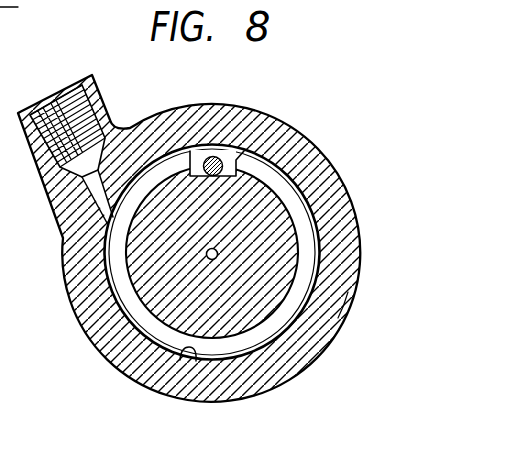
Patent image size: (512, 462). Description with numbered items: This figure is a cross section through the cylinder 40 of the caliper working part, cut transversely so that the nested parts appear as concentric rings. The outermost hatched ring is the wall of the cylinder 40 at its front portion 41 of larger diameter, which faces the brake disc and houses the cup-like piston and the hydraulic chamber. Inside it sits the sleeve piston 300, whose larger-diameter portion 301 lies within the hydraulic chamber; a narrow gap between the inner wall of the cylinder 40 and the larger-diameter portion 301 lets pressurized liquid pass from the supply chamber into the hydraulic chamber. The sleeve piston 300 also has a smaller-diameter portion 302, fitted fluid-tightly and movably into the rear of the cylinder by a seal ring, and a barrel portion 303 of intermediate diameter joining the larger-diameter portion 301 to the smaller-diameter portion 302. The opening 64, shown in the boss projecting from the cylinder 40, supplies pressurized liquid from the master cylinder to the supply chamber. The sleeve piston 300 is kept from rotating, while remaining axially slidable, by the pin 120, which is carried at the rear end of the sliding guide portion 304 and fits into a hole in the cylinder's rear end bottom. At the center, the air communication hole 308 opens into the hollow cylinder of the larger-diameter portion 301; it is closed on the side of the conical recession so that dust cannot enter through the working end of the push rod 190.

The cylinder 40 is at (303, 157).
The front portion 41 is at (193, 354).
The opening 64 is at (107, 197).
The pin 120 is at (213, 156).
The push rod 190 is at (26, 7).
The sleeve piston 300 is at (306, 191).
The larger-diameter portion 301 is at (306, 218).
The smaller-diameter portion 302 is at (155, 308).
The barrel portion 303 is at (350, 288).
The sliding guide portion 304 is at (193, 157).
The air communication hole 308 is at (218, 252).